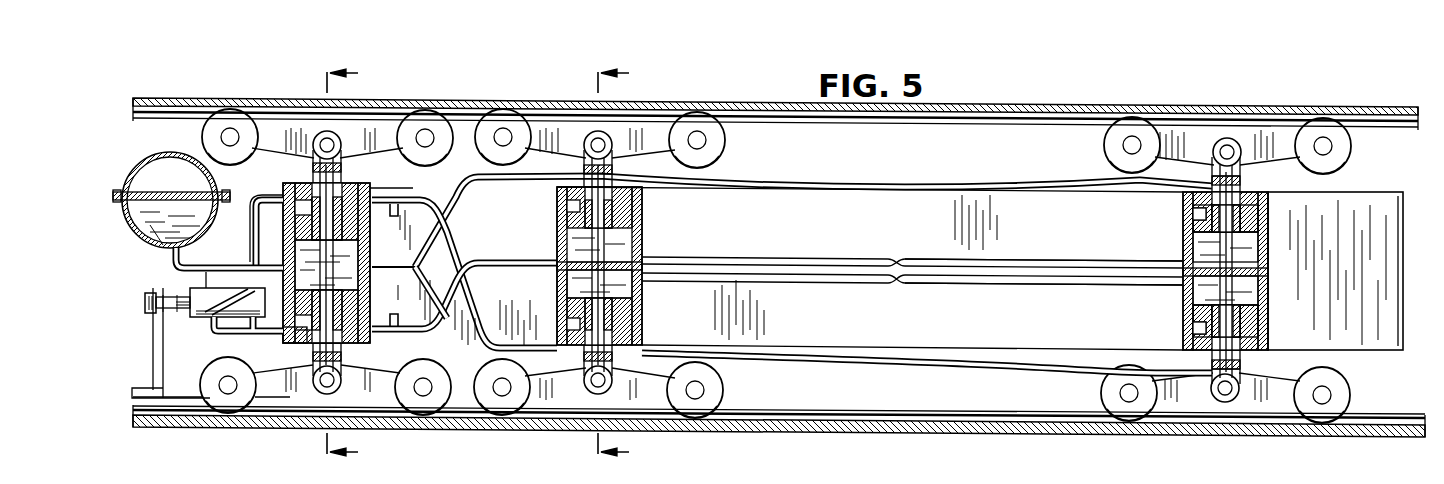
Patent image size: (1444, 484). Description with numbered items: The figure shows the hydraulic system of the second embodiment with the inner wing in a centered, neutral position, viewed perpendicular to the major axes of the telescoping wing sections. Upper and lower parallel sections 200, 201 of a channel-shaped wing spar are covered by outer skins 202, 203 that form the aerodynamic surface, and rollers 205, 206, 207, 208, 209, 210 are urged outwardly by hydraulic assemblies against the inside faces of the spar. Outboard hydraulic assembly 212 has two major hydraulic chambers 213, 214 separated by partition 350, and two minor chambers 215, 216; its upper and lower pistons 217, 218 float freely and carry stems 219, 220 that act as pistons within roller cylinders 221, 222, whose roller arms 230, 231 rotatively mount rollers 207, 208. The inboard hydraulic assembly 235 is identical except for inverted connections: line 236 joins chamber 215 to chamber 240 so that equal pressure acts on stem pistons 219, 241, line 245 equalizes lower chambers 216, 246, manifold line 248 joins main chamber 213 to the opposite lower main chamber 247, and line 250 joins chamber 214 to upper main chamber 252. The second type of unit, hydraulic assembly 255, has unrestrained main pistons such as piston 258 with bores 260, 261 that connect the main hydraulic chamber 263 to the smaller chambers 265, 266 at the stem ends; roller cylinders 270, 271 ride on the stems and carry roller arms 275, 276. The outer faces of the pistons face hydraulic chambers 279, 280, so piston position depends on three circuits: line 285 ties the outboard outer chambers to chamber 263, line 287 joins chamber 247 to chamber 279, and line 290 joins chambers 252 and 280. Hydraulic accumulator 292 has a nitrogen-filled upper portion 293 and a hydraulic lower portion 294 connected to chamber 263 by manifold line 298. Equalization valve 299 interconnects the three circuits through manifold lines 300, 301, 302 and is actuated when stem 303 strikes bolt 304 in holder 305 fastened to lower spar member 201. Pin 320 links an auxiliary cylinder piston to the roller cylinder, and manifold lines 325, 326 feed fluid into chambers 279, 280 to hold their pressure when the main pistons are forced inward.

The upper parallel section 200 is at (294, 98).
The lower parallel section 201 is at (167, 420).
The outer skin 202 is at (490, 100).
The outer skin 203 is at (578, 430).
The roller 205 is at (229, 104).
The roller 206 is at (517, 115).
The roller 207 is at (1104, 148).
The roller 208 is at (1118, 405).
The roller 209 is at (483, 398).
The roller 210 is at (218, 404).
The hydraulic assembly 212 is at (1266, 243).
The major hydraulic chamber 213 is at (1203, 252).
The major hydraulic chamber 214 is at (1200, 293).
The minor hydraulic chamber 215 is at (1243, 174).
The minor hydraulic chamber 216 is at (1238, 360).
The upper piston 217 is at (1244, 230).
The lower piston 218 is at (1244, 323).
The stem 219 is at (1218, 206).
The stem 220 is at (1194, 332).
The roller cylinder 221 is at (1210, 176).
The roller cylinder 222 is at (1240, 374).
The roller arm 230 is at (1285, 142).
The roller arm 231 is at (1263, 398).
The hydraulic assembly 235 is at (643, 228).
The manifold line 236 is at (836, 186).
The hydraulic chamber 240 is at (557, 188).
The stem piston 241 is at (637, 198).
The manifold line 245 is at (894, 362).
The hydraulic chamber 246 is at (175, 195).
The lower main chamber 247 is at (633, 290).
The manifold line 248 is at (1066, 258).
The manifold line 250 is at (1006, 284).
The upper main chamber 252 is at (652, 254).
The hydraulic assembly 255 is at (362, 252).
The piston 258 is at (352, 297).
The bore 260 is at (393, 176).
The bore 261 is at (334, 350).
The main hydraulic chamber 263 is at (298, 247).
The smaller chamber 265 is at (343, 170).
The smaller chamber 266 is at (317, 357).
The roller cylinder 270 is at (312, 168).
The roller cylinder 271 is at (345, 376).
The roller arm 275 is at (378, 140).
The roller arm 276 is at (290, 390).
The hydraulic chamber 279 is at (299, 208).
The hydraulic chamber 280 is at (288, 338).
The line 285 is at (461, 203).
The line 287 is at (512, 266).
The line 290 is at (458, 283).
The hydraulic accumulator 292 is at (163, 156).
The upper portion 293 is at (197, 179).
The lower portion 294 is at (162, 222).
The manifold line 298 is at (188, 265).
The equalization valve 299 is at (241, 318).
The manifold line 300 is at (252, 240).
The manifold line 301 is at (205, 282).
The manifold line 302 is at (212, 327).
The stem 303 is at (183, 311).
The bolt 304 is at (150, 302).
The holder 305 is at (157, 372).
The pin 320 is at (323, 128).
The manifold line 325 is at (402, 205).
The manifold line 326 is at (400, 316).
The partition 350 is at (1244, 272).